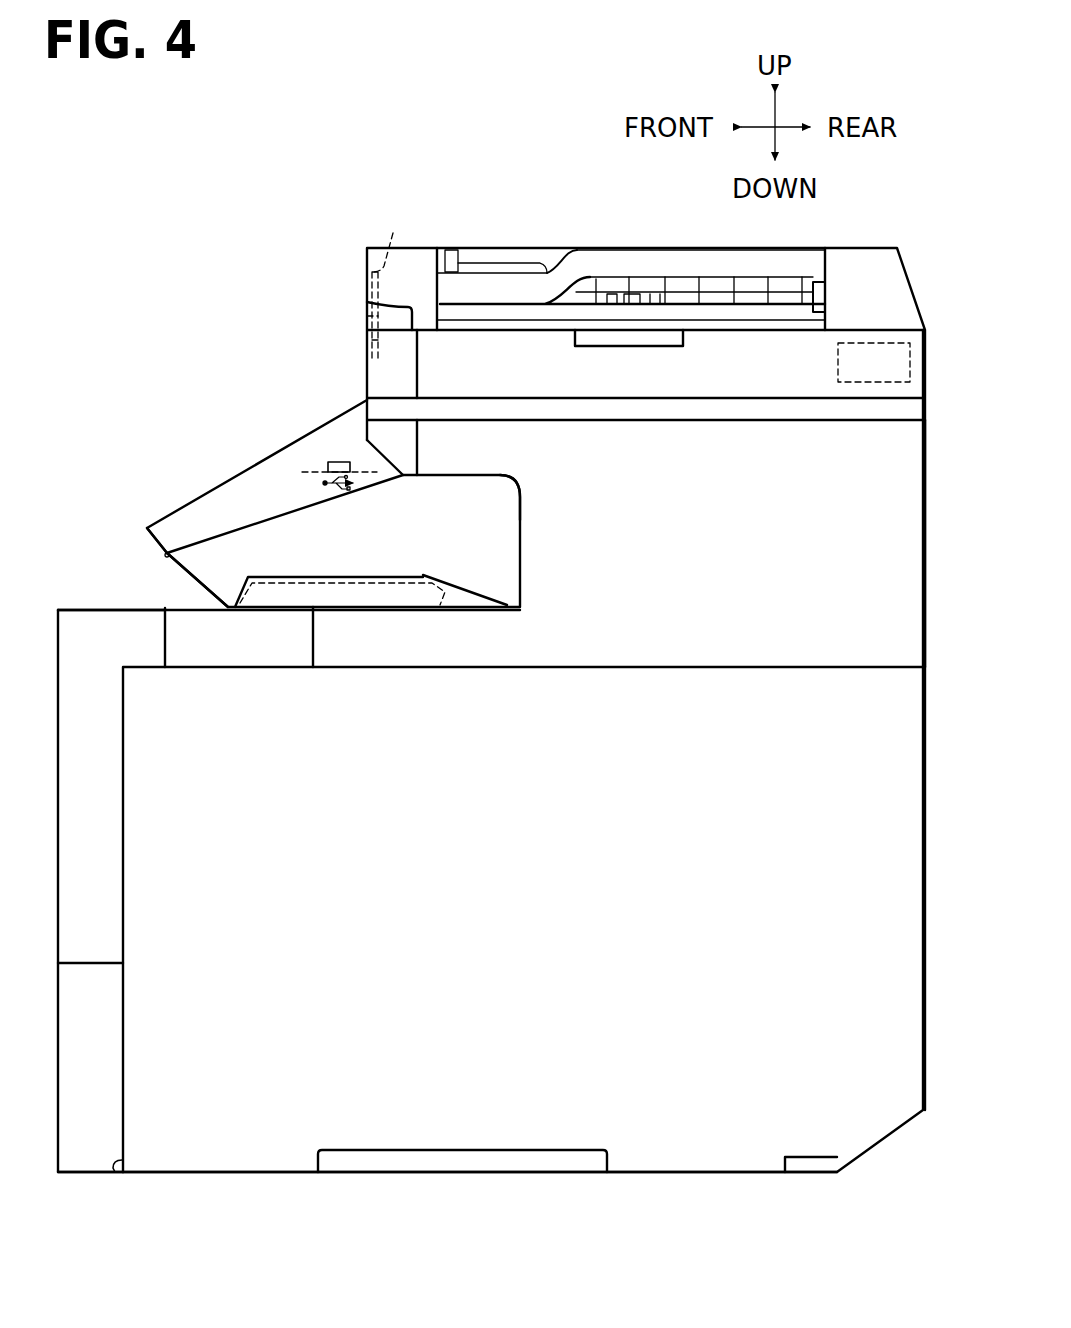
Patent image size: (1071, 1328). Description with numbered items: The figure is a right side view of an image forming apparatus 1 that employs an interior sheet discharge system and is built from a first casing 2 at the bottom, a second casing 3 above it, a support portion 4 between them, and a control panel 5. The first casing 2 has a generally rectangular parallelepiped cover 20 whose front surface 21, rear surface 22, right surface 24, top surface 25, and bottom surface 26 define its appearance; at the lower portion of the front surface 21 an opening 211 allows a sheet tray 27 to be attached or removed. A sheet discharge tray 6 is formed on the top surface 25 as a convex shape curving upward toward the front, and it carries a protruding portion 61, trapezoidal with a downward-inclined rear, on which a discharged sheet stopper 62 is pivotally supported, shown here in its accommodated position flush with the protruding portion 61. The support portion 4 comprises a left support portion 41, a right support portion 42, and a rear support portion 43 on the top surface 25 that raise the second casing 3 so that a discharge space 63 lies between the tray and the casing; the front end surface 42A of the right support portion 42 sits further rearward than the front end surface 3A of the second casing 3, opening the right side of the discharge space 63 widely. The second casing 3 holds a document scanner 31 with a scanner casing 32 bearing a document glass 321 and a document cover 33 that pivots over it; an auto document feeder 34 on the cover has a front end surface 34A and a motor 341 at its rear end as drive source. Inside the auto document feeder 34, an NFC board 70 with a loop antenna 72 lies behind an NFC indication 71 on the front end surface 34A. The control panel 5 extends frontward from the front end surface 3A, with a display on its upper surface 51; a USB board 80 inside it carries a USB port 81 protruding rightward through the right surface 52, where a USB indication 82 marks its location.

The image forming apparatus 1 is at (108, 178).
The first casing 2 is at (90, 592).
The second casing 3 is at (349, 236).
The front end surface of the second casing 3A is at (367, 357).
The support portion 4 is at (513, 502).
The control panel 5 is at (214, 461).
The sheet discharge tray 6 is at (461, 602).
The cover 20 is at (627, 1178).
The front surface 21 is at (48, 808).
The rear surface 22 is at (925, 898).
The right surface 24 is at (532, 933).
The top surface 25 is at (105, 608).
The bottom surface 26 is at (652, 1172).
The sheet tray 27 is at (85, 1163).
The document scanner 31 is at (356, 298).
The scanner casing 32 is at (551, 430).
The document cover 33 is at (476, 374).
The auto document feeder 34 is at (655, 246).
The front end surface of the ADF 34A is at (367, 256).
The left support portion 41 is at (186, 574).
The right support portion 42 is at (726, 560).
The front end surface of the right support portion 42A is at (520, 528).
The rear support portion 43 is at (925, 543).
The upper surface of the control panel 51 is at (191, 502).
The right surface of the control panel 52 is at (257, 472).
The protruding portion 61 is at (382, 598).
The discharged sheet stopper 62 is at (338, 580).
The discharge space 63 is at (412, 547).
The NFC board 70 is at (390, 283).
The NFC indication 71 is at (367, 336).
The loop antenna 72 is at (367, 316).
The USB board 80 is at (303, 462).
The USB port 81 is at (340, 462).
The USB indication 82 is at (325, 483).
The opening 211 is at (115, 1168).
The document glass 321 is at (722, 398).
The motor 341 is at (872, 343).